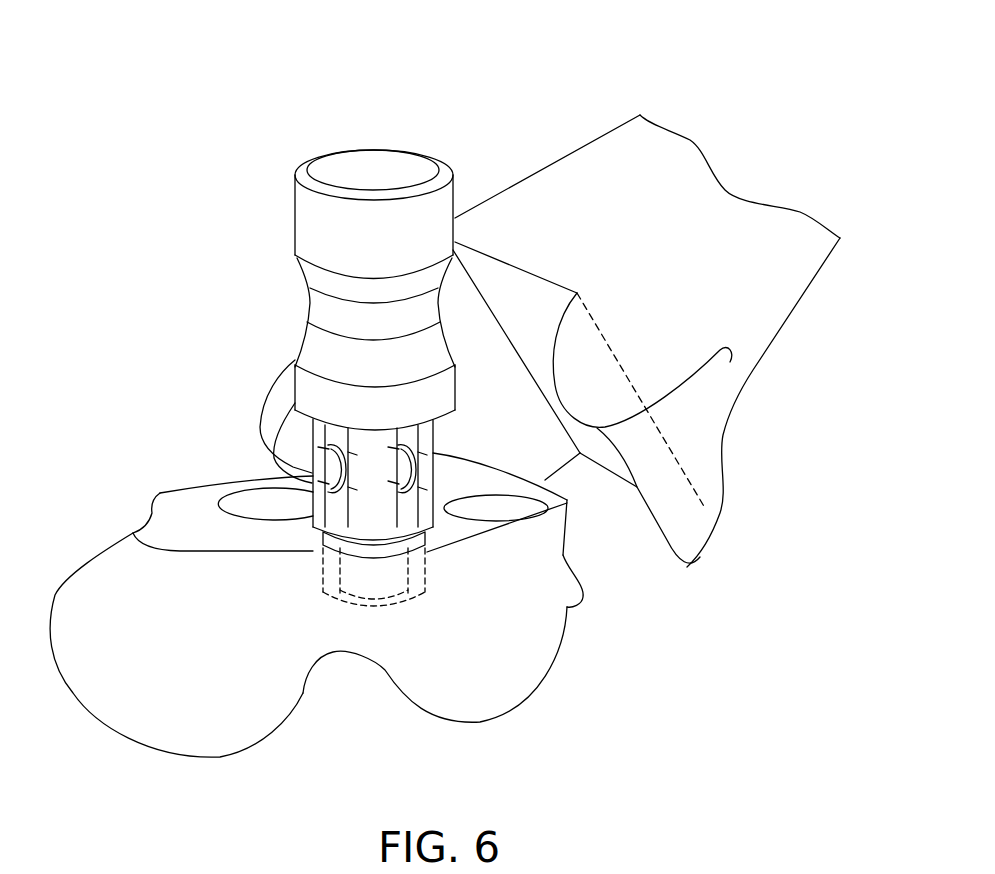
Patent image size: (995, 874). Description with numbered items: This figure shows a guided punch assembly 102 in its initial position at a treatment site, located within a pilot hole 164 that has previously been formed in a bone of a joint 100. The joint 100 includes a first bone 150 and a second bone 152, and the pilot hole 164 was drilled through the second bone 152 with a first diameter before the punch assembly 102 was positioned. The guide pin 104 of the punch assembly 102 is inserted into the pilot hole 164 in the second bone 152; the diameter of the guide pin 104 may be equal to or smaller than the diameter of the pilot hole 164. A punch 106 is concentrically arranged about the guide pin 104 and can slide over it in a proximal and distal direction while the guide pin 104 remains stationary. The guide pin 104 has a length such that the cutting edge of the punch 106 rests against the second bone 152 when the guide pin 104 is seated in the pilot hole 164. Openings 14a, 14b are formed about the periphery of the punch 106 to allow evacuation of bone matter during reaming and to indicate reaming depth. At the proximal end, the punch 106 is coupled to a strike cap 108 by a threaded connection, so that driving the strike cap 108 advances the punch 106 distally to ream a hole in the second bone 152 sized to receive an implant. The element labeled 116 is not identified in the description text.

The joint 100 is at (552, 289).
The guided punch assembly 102 is at (373, 390).
The guide pin 104 is at (322, 548).
The punch 106 is at (437, 433).
The strike cap 108 is at (347, 272).
The recess in head 116 is at (355, 167).
The opening 14a is at (433, 483).
The opening 14b is at (323, 466).
The first bone 150 is at (797, 293).
The second bone 152 is at (125, 735).
The pilot hole 164 is at (397, 600).